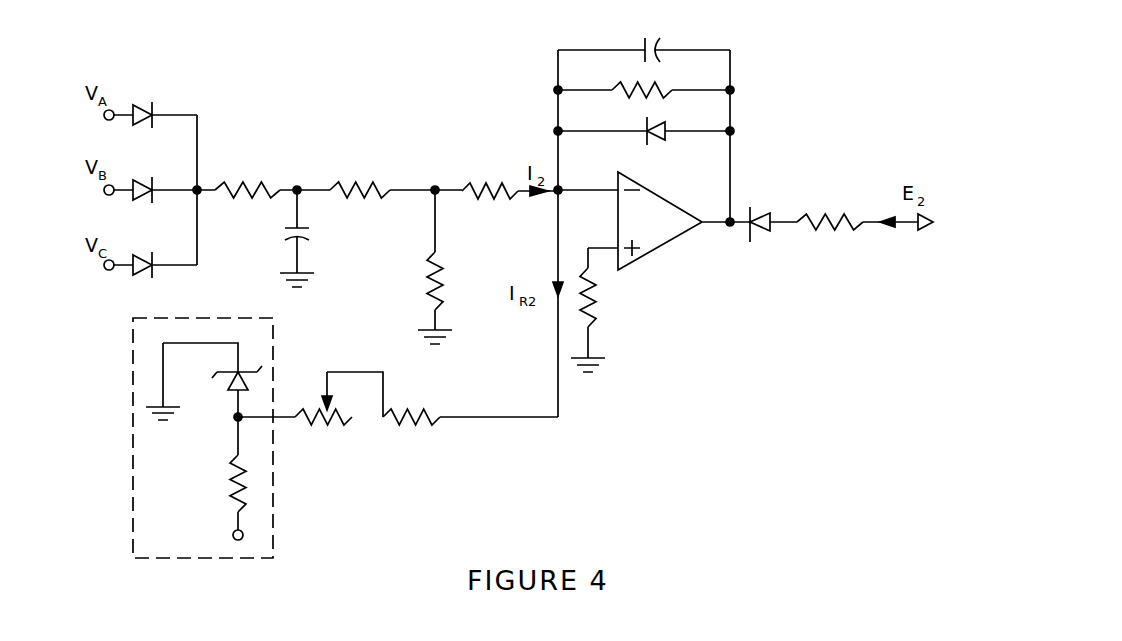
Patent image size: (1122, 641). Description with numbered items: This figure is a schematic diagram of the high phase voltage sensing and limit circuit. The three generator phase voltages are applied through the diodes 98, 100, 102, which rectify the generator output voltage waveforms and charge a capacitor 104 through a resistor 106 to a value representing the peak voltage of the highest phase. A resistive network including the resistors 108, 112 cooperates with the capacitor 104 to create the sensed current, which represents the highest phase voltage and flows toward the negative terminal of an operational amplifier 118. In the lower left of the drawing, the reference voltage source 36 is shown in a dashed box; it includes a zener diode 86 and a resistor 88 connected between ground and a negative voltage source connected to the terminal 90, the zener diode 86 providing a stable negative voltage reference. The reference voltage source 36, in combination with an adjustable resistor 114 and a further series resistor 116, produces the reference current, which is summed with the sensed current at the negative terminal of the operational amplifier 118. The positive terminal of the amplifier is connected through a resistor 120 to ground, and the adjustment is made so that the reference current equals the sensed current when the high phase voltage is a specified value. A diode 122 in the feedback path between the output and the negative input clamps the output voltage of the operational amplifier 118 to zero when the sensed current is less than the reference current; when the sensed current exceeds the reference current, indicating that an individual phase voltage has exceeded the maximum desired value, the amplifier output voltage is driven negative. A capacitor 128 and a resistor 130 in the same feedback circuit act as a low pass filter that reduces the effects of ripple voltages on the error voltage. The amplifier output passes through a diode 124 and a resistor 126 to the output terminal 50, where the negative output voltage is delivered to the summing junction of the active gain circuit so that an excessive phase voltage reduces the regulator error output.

The reference voltage source 36 is at (273, 332).
The output terminal E2 50 is at (904, 224).
The zener diode 86 is at (232, 383).
The resistor 88 is at (233, 468).
The terminal 90 is at (233, 533).
The diode 98 is at (139, 106).
The diode 100 is at (143, 181).
The diode 102 is at (143, 257).
The capacitor 104 is at (304, 234).
The resistor 106 is at (246, 186).
The resistor 108 is at (364, 185).
The resistor 112 is at (440, 262).
The adjustable resistor 114 is at (320, 426).
The resistor 116 is at (394, 426).
The operational amplifier 118 is at (680, 237).
The resistor 120 is at (595, 304).
The diode 122 is at (657, 129).
The diode 124 is at (751, 212).
The resistor 126 is at (817, 212).
The capacitor 128 is at (657, 46).
The resistor 130 is at (659, 90).